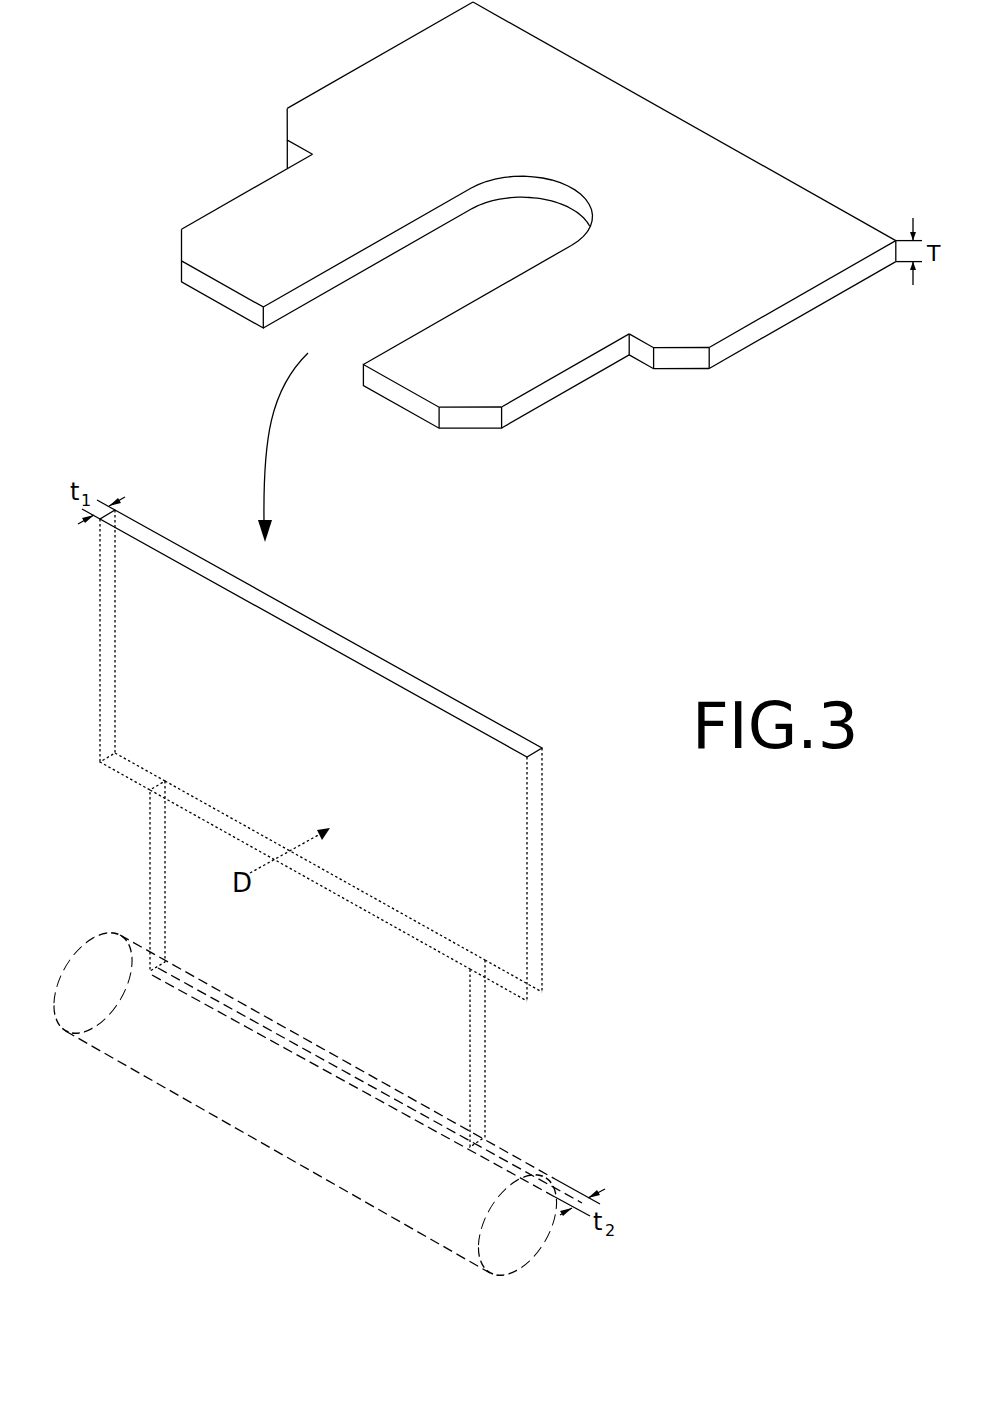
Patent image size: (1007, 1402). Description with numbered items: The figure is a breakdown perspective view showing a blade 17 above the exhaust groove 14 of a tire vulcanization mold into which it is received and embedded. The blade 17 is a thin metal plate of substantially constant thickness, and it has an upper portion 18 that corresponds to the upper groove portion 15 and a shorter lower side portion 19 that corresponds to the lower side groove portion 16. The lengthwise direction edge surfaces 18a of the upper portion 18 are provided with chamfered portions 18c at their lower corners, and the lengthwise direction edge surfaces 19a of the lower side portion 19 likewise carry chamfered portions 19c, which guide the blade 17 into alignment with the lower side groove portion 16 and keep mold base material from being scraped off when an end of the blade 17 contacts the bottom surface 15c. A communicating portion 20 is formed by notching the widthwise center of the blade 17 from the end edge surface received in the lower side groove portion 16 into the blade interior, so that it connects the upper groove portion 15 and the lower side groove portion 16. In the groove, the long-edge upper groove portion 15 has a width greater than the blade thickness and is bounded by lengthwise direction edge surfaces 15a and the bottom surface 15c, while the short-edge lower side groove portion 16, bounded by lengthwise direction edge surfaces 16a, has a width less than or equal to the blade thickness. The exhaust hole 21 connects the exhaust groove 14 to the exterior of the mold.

The exhaust groove 14 is at (399, 640).
The upper groove portion 15 is at (483, 927).
The lengthwise direction edge surfaces 15a is at (110, 647).
The bottom surface 15c is at (133, 768).
The lower side groove portion 16 is at (215, 853).
The lengthwise direction edge surfaces 16a is at (158, 833).
The blade 17 is at (648, 60).
The upper portion 18 is at (665, 145).
The lengthwise direction edge surfaces 18a is at (384, 62).
The chamfered portions 18c is at (287, 120).
The lower side portion 19 is at (538, 358).
The lengthwise direction edge surfaces 19a is at (252, 186).
The chamfered portions 19c is at (178, 245).
The communicating portion 20 is at (463, 253).
The exhaust hole 21 is at (264, 1072).